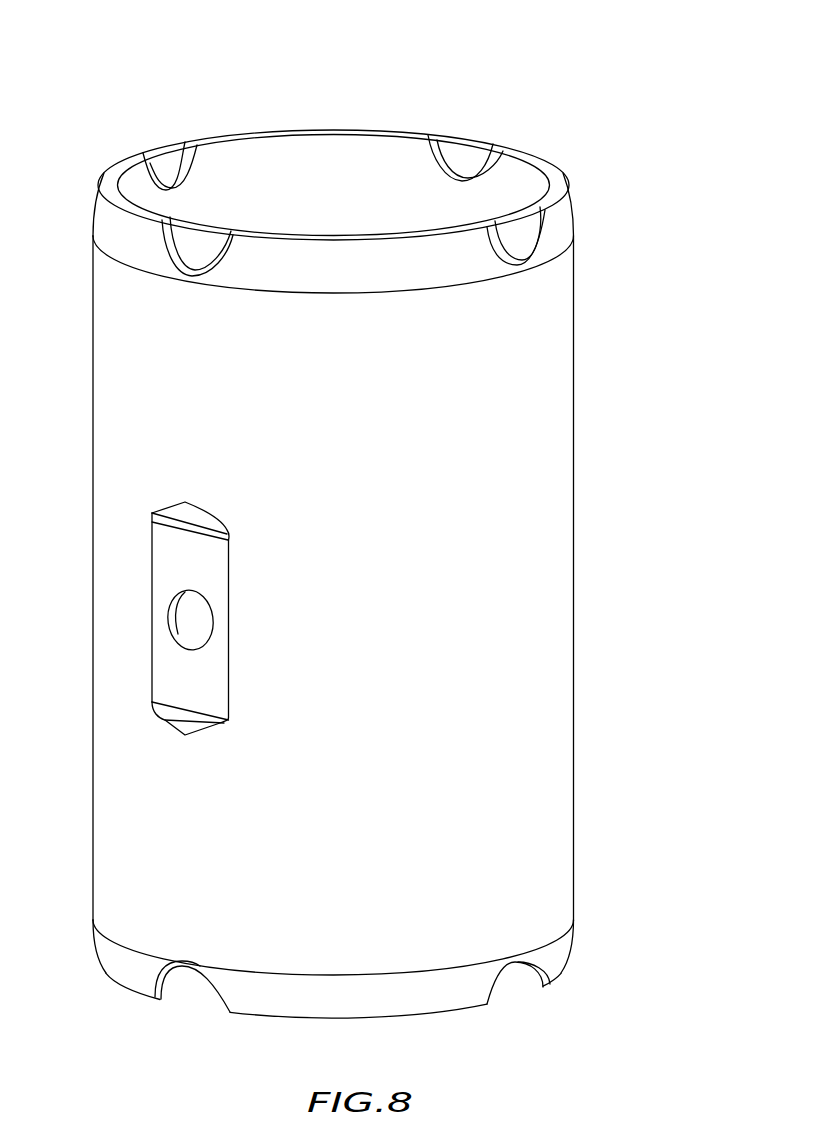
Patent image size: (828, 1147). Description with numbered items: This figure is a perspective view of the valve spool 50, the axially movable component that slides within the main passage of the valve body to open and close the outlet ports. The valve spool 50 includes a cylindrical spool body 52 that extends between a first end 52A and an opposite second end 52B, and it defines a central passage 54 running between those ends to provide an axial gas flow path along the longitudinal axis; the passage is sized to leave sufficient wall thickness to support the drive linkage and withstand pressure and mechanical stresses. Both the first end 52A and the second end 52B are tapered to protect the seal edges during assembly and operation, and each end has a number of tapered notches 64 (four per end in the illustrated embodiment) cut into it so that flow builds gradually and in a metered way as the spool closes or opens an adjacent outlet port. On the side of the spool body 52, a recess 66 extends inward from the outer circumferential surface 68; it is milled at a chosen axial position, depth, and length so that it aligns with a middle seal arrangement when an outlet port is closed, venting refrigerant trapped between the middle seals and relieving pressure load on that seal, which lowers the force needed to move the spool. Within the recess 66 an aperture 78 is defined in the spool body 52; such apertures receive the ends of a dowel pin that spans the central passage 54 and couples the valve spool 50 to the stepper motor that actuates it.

The valve spool 50 is at (372, 547).
The spool body 52 is at (332, 547).
The first end 52A is at (260, 108).
The second end 52B is at (288, 1040).
The central passage 54 is at (332, 146).
The tapered notches 64 is at (153, 116).
The recess 66 is at (200, 618).
The outer circumferential surface 68 is at (110, 338).
The aperture 78 is at (170, 614).